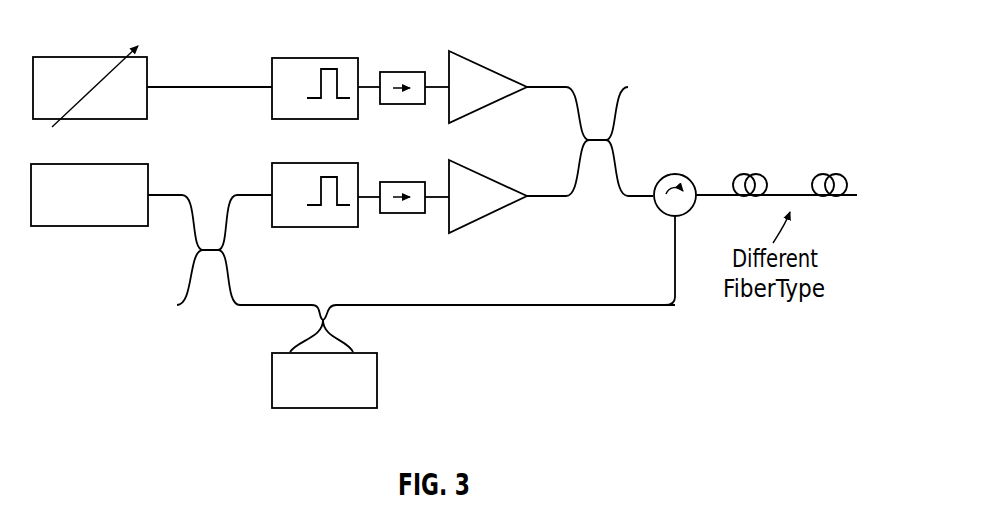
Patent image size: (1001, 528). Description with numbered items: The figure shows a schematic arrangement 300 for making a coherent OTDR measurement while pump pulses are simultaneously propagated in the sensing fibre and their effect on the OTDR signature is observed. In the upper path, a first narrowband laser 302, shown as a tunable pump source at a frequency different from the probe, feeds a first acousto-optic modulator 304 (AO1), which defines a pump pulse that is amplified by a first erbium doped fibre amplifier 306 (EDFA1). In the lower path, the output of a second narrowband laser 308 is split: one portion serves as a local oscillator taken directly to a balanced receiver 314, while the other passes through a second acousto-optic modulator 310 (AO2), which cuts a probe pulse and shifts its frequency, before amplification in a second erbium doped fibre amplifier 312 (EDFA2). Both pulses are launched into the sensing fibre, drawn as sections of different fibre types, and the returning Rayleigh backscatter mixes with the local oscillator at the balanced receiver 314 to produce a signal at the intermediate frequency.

The arrangement 300 is at (726, 43).
The first narrowband laser 302 is at (92, 119).
The first acousto-optic modulator 304 is at (302, 58).
The first erbium doped fibre amplifier 306 is at (488, 65).
The second narrowband laser 308 is at (92, 226).
The second acousto-optic modulator 310 is at (302, 163).
The second erbium doped fibre amplifier 312 is at (488, 175).
The balanced receiver 314 is at (377, 379).